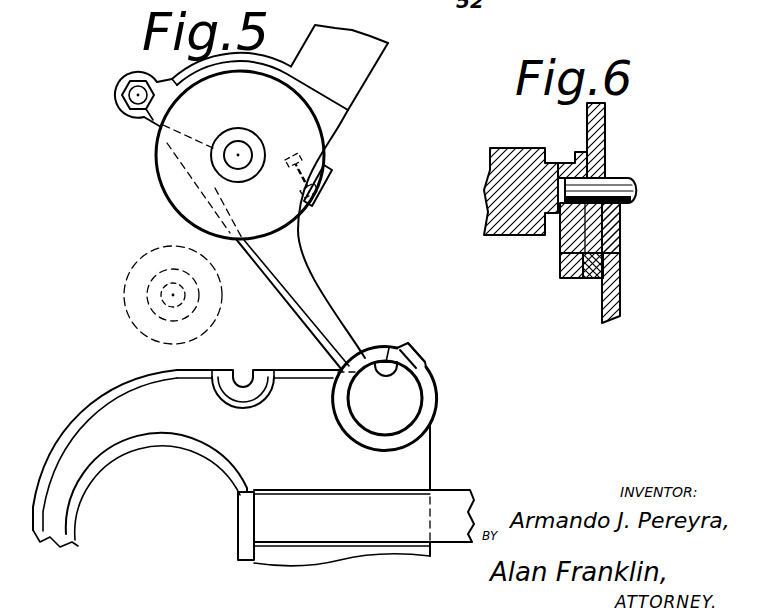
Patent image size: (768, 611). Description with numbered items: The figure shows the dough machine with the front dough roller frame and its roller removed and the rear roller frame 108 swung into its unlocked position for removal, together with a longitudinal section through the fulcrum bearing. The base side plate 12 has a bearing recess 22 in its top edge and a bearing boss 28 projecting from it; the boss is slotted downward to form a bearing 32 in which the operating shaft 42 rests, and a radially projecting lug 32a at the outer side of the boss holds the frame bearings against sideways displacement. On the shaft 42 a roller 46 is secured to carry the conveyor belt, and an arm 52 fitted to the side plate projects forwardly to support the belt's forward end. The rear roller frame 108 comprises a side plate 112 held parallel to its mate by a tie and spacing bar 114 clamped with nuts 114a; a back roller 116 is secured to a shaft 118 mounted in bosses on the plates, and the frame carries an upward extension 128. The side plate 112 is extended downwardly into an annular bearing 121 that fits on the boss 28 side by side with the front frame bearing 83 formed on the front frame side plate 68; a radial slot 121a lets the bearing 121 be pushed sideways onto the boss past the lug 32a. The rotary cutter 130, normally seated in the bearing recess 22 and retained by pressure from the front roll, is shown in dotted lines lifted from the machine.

In FIG. 5, the side plate 12 is at (133, 408).
In FIG. 6, the side plate 12 is at (613, 298).
In FIG. 5, the bearing recesses 22 is at (245, 375).
In FIG. 5, the bearing boss 28 is at (389, 389).
In FIG. 6, the bearing boss 28 is at (567, 238).
In FIG. 5, the bearing 32 is at (400, 379).
In FIG. 5, the lug 32a is at (417, 356).
In FIG. 6, the operating shaft 42 is at (632, 189).
In FIG. 6, the roller 46 is at (510, 156).
In FIG. 5, the arm 52 is at (448, 503).
In FIG. 6, the side plate 68 is at (607, 118).
In FIG. 6, the bearing 83 is at (567, 164).
In FIG. 5, the rear roller frame 108 is at (303, 242).
In FIG. 5, the side plate 112 is at (333, 119).
In FIG. 5, the tie and spacing bar 114 is at (134, 95).
In FIG. 5, the nuts 114a is at (125, 108).
In FIG. 5, the back roller 116 is at (171, 181).
In FIG. 5, the shaft 118 is at (252, 150).
In FIG. 5, the annular bearing 121 is at (346, 417).
In FIG. 6, the annular bearing 121 is at (577, 279).
In FIG. 5, the radial slot 121a is at (391, 361).
In FIG. 5, the upward extension 128 is at (366, 62).
In FIG. 5, the rotary cutter 130 is at (126, 282).